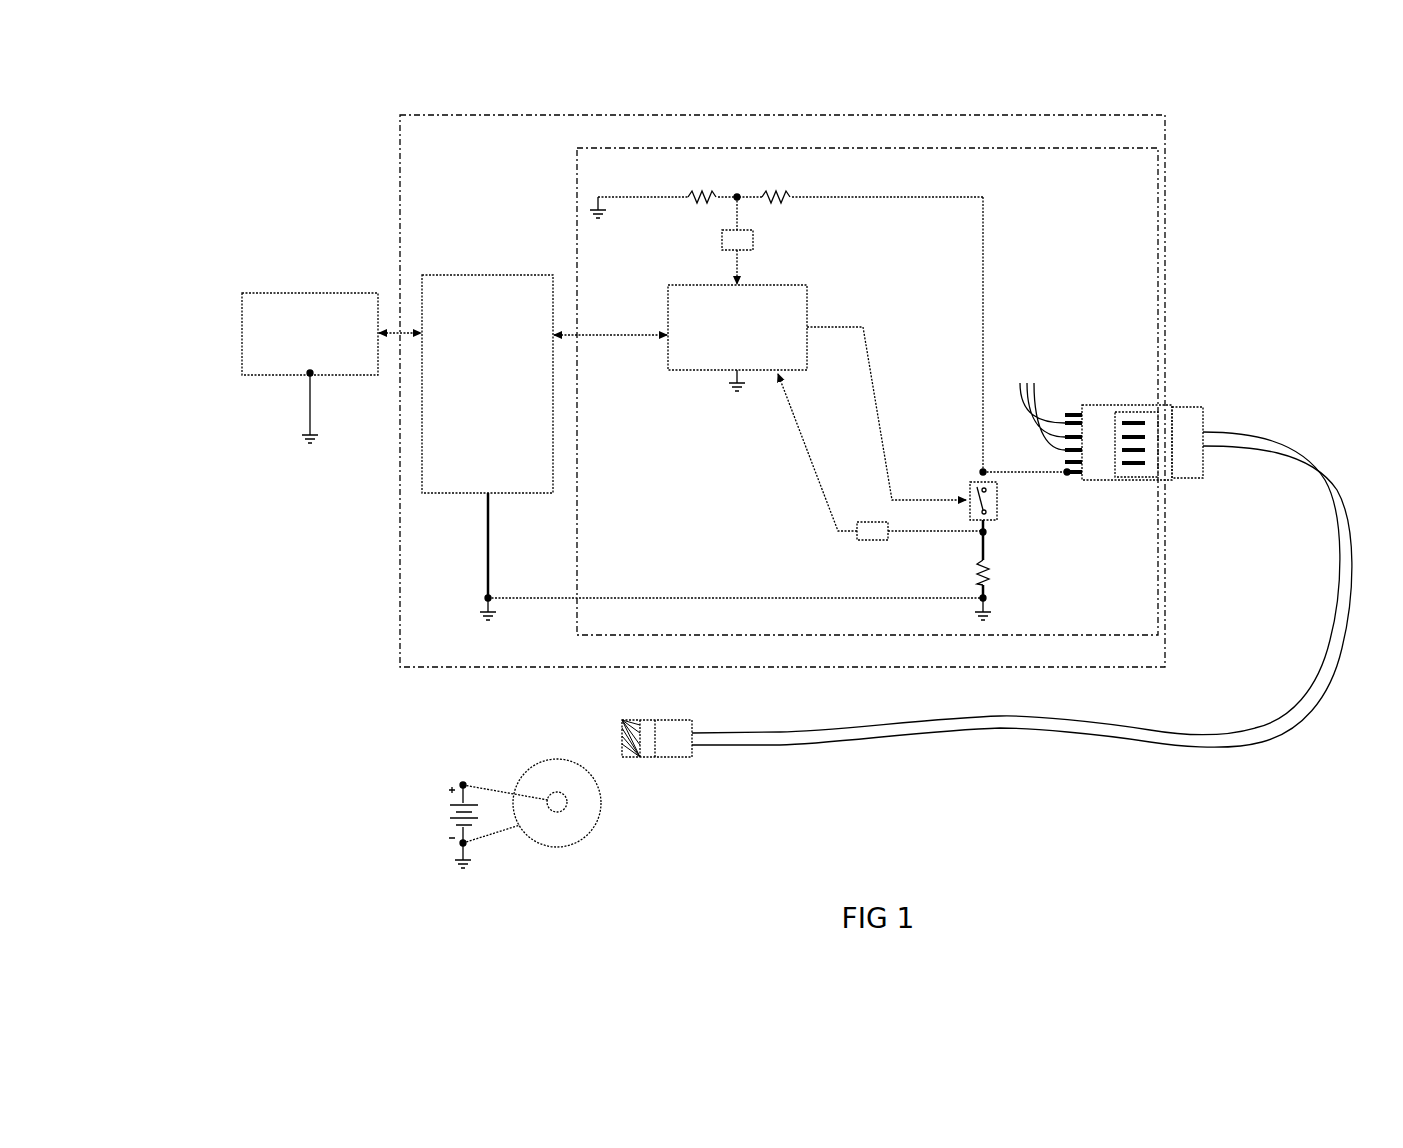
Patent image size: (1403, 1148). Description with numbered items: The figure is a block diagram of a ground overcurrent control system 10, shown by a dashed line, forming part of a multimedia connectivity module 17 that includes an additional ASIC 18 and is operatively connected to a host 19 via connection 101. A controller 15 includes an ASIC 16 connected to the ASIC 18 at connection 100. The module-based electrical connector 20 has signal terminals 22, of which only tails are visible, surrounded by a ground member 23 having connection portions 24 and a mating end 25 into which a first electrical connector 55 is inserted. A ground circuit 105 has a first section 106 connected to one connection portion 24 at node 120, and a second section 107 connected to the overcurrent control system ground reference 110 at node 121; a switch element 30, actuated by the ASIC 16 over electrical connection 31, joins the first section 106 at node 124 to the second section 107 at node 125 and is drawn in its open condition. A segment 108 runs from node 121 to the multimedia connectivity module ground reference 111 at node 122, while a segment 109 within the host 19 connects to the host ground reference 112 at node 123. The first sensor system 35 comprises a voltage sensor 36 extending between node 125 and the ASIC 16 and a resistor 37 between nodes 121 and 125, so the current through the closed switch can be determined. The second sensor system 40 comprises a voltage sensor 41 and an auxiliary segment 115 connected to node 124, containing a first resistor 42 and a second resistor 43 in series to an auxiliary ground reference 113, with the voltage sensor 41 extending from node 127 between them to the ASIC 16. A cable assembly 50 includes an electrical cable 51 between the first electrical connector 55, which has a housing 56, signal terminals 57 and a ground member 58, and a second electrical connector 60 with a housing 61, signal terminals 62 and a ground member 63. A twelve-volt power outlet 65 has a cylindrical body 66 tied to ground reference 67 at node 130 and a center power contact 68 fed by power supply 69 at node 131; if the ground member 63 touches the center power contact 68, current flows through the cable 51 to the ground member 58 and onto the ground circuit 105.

The controller 15 is at (330, 128).
The multimedia connectivity module 17 is at (407, 117).
The ground overcurrent control system 10 is at (575, 177).
The host 19 is at (270, 293).
The connection 101 is at (392, 330).
The ASIC 18 is at (470, 288).
The connection 100 is at (608, 335).
The second sensor system 40 is at (856, 182).
The second resistor 43 is at (697, 197).
The first resistor 42 is at (777, 197).
The node 127 is at (738, 194).
The auxiliary ground reference 113 is at (603, 216).
The auxiliary segment 115 is at (983, 197).
The voltage sensor 41 is at (755, 243).
The ASIC 16 is at (790, 300).
The overcurrent control system ground reference 110 is at (733, 387).
The electrical connection 31 is at (870, 383).
The switch element 30 is at (999, 492).
The first sensor system 35 is at (788, 482).
The voltage sensor 36 is at (870, 520).
The node 124 is at (980, 470).
The first section 106 is at (983, 465).
The node 120 is at (1065, 470).
The second section 107 is at (985, 555).
The node 125 is at (990, 532).
The resistor 37 is at (975, 575).
The node 121 is at (990, 597).
The ground circuit 105 is at (842, 590).
The segment 108 is at (688, 598).
The node 122 is at (488, 598).
The multimedia connectivity module ground reference 111 is at (495, 622).
The segment 109 is at (310, 412).
The node 123 is at (315, 375).
The host ground reference 112 is at (316, 440).
The electrical connector 20 is at (1100, 405).
The ground member 23 is at (1128, 412).
The ground member 58 is at (1152, 398).
The connection portions 24 is at (1072, 412).
The signal terminals 57 is at (1150, 454).
The signal terminals 22 is at (1040, 402).
The mating end 25 is at (1175, 422).
The first electrical connector 55 is at (1205, 423).
The housing 56 is at (1188, 484).
The electrical cable 51 is at (1043, 727).
The cable assembly 50 is at (1300, 745).
The second electrical connector 60 is at (670, 730).
The signal terminals 62 is at (624, 736).
The ground member 63 is at (625, 760).
The housing 61 is at (672, 750).
The power outlet 65 is at (502, 742).
The cylindrical body 66 is at (580, 842).
The center power contact 68 is at (557, 792).
The power supply 69 is at (452, 805).
The node 131 is at (460, 785).
The node 130 is at (460, 844).
The ground reference 67 is at (470, 866).